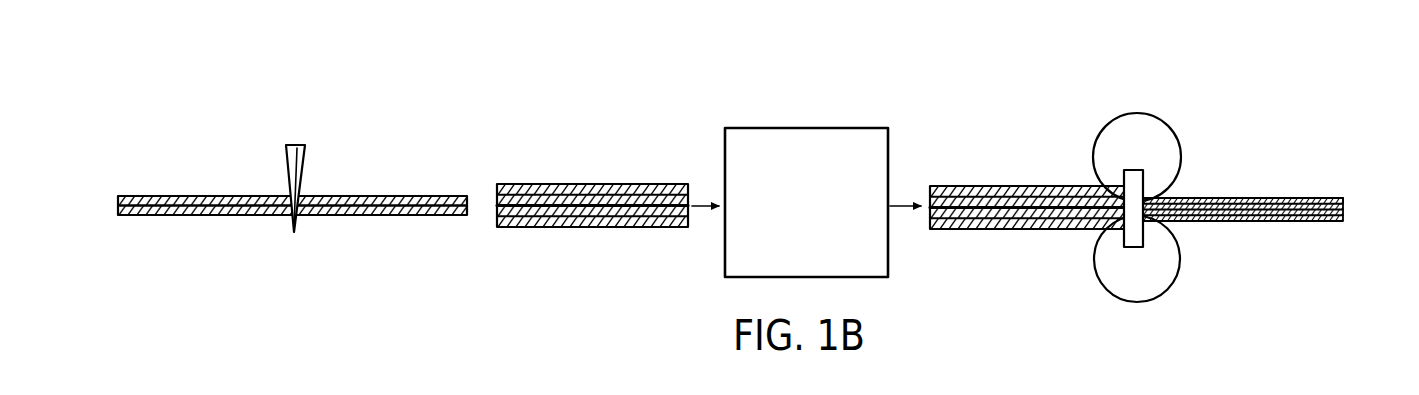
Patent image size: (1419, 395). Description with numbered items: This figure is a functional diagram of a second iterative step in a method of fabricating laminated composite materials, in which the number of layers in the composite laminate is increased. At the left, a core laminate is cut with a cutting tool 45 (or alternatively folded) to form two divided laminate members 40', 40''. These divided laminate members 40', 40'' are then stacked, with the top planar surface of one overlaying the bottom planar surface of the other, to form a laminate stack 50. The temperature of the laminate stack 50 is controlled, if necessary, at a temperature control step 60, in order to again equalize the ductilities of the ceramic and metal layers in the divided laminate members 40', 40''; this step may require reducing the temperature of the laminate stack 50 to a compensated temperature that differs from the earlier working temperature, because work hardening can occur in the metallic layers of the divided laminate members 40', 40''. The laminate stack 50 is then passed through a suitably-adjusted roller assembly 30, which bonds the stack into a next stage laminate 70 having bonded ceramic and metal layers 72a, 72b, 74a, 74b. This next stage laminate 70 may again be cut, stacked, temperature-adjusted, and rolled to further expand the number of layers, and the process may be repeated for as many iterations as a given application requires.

The divided laminate member 40' is at (390, 195).
The divided laminate member 40'' is at (414, 240).
The cutting tool 45 is at (297, 178).
The laminate stack 50 is at (605, 231).
The temperature control step 60 is at (830, 128).
The roller assembly 30 is at (1190, 89).
The bonded ceramic and metal layer 72a is at (1255, 198).
The bonded ceramic and metal layer 74a is at (1272, 207).
The bonded ceramic and metal layer 74b is at (1241, 221).
The bonded ceramic and metal layer 72b is at (1291, 222).
The next stage laminate 70 is at (1348, 207).